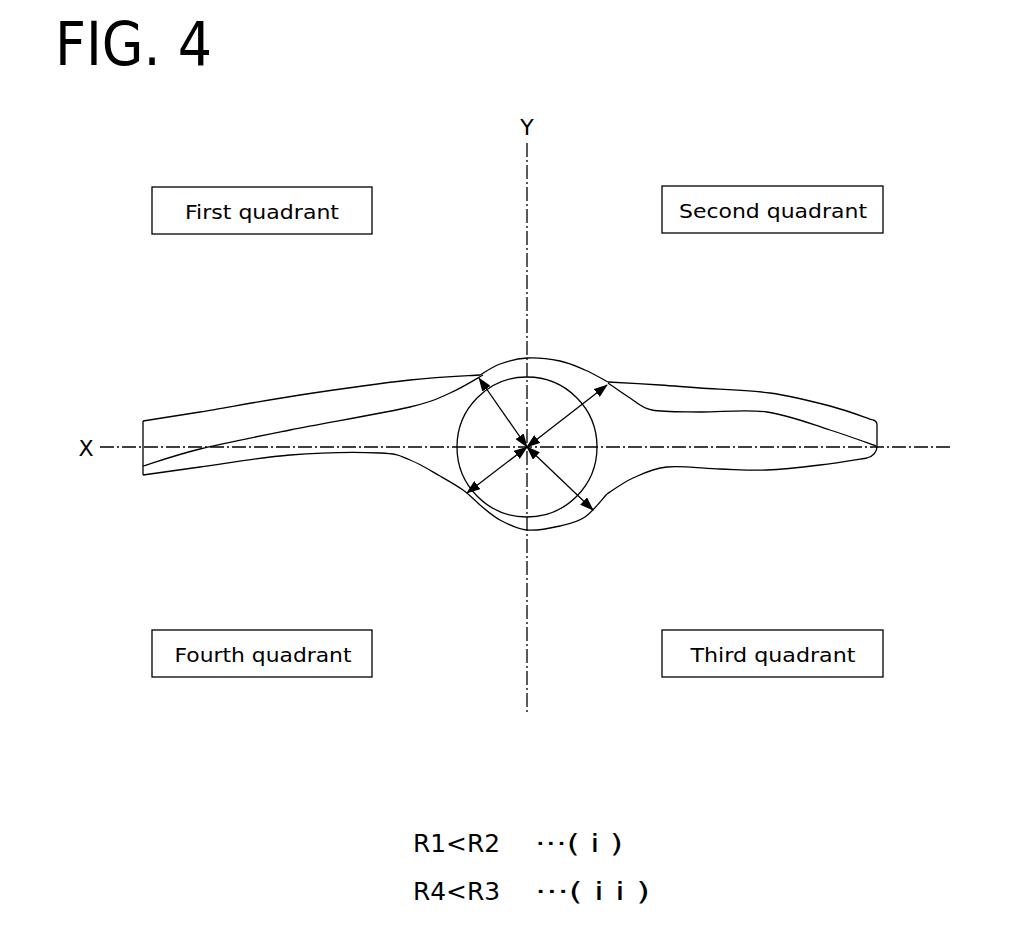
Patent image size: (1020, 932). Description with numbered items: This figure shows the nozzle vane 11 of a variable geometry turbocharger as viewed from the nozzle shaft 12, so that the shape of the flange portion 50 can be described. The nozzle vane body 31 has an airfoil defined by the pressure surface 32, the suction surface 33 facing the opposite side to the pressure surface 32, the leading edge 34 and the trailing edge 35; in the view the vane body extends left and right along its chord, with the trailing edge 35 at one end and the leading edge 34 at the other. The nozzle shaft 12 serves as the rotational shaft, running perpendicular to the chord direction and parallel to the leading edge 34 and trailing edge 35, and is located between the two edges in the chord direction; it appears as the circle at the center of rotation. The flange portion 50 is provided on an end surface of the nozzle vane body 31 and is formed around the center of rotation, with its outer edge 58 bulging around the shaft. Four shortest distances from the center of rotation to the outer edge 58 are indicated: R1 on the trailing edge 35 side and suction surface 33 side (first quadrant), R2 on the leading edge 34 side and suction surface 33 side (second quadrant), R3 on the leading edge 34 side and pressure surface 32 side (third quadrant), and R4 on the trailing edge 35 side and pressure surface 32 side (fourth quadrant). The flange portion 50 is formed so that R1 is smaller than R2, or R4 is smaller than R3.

The nozzle vane 11 is at (509, 378).
The nozzle shaft 12 is at (542, 490).
The nozzle vane body 31 is at (344, 398).
The pressure surface 32 is at (777, 472).
The suction surface 33 is at (763, 398).
The leading edge 34 is at (879, 434).
The trailing edge 35 is at (141, 433).
The flange portion 50 is at (490, 512).
The outer edge 58 is at (605, 361).
The shortest distance in first quadrant R1 is at (496, 410).
The shortest distance in second quadrant R2 is at (567, 418).
The shortest distance in third quadrant R3 is at (585, 462).
The shortest distance in fourth quadrant R4 is at (490, 463).